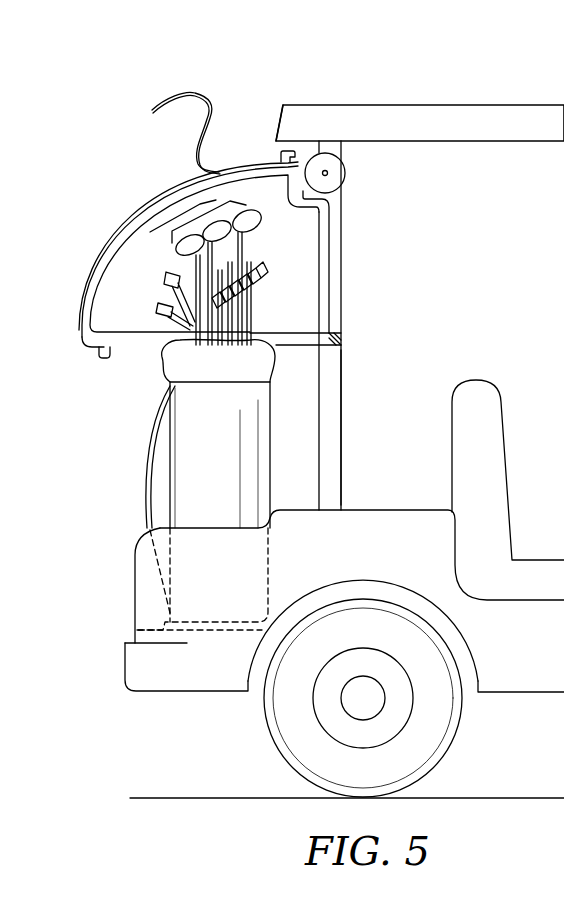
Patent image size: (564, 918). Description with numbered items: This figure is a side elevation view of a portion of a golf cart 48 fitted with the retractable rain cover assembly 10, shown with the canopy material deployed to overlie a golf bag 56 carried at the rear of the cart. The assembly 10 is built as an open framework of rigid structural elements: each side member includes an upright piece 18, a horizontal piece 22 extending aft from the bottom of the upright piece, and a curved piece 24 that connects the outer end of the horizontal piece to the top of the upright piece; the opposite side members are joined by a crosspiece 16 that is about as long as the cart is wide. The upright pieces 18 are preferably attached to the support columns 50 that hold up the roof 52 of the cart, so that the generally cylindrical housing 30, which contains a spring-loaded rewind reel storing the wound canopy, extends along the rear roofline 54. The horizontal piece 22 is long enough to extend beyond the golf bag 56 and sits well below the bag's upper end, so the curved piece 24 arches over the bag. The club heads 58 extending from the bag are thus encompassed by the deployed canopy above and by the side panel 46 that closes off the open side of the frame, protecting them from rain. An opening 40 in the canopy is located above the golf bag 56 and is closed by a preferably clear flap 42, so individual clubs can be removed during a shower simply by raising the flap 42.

The retractable rain cover assembly 10 is at (105, 125).
The crosspiece 16 is at (343, 338).
The upright piece 18 is at (343, 256).
The horizontal piece 22 is at (133, 348).
The curved piece 24 is at (92, 312).
The housing 30 is at (339, 173).
The opening 40 is at (111, 252).
The flap 42 is at (205, 100).
The panel 46 is at (302, 253).
The golf cart 48 is at (150, 616).
The support column 50 is at (345, 378).
The roof 52 is at (383, 104).
The rear roofline 54 is at (300, 104).
The golf bag 56 is at (190, 416).
The club head 58 is at (162, 212).